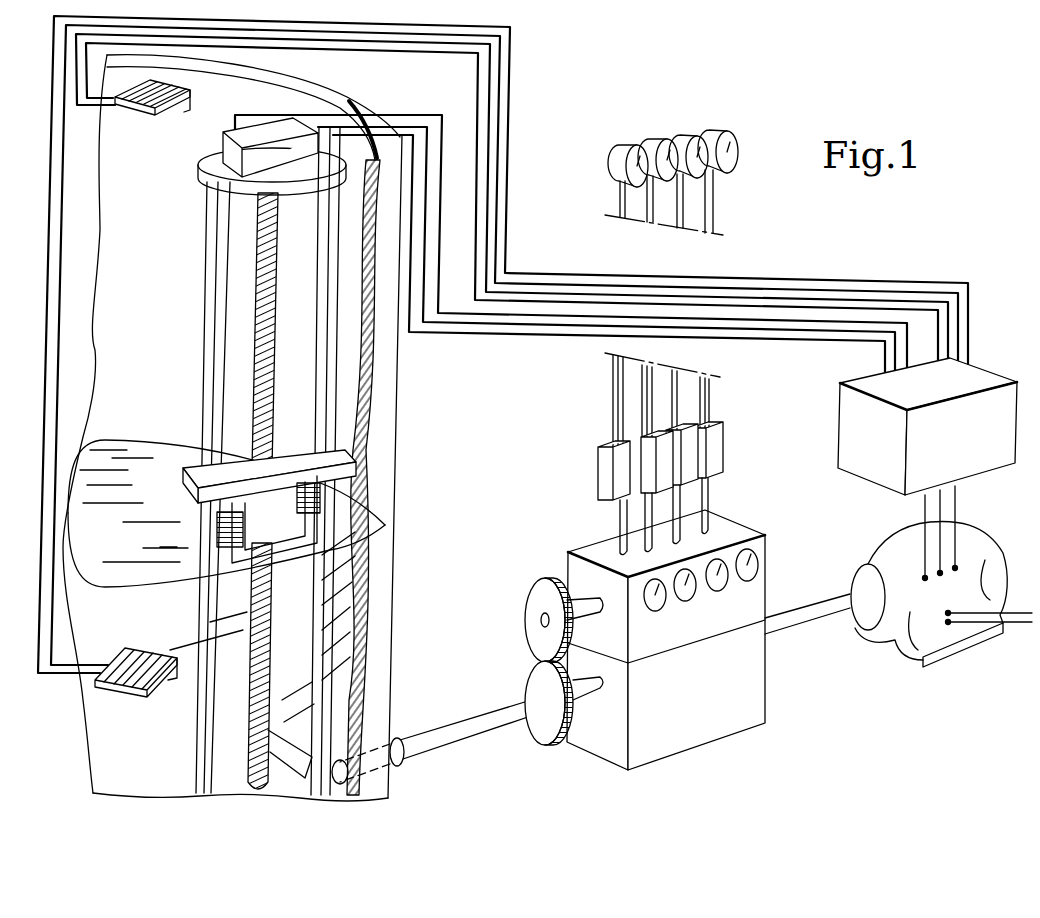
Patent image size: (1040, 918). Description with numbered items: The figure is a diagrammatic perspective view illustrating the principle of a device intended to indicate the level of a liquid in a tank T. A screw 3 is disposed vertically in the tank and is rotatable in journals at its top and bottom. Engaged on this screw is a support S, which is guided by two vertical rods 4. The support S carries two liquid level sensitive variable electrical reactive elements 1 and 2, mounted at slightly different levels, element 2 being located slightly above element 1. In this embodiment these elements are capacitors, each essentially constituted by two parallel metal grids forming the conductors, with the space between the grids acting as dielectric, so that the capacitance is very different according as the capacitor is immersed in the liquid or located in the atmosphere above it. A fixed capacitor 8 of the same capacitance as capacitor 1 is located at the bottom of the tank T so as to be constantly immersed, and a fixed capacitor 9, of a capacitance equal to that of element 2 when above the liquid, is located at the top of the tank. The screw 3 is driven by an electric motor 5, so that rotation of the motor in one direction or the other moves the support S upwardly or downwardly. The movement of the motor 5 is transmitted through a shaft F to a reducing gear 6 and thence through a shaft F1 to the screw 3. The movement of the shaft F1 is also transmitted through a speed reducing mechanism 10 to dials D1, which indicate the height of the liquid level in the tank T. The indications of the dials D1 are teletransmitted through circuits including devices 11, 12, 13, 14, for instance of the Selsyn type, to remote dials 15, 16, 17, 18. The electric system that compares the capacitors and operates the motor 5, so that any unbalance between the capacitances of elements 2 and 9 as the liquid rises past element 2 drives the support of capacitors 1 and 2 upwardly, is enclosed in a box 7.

The liquid level sensitive variable electrical reactive element 1 is at (215, 530).
The liquid level sensitive variable electrical reactive element 2 is at (333, 525).
The screw 3 is at (262, 296).
The vertical rods 4 is at (212, 400).
The electric motor 5 is at (922, 635).
The reducing gear 6 is at (705, 717).
The box 7 is at (988, 432).
The capacitor 8 is at (97, 686).
The capacitor 9 is at (118, 108).
The speed reducing mechanism 10 is at (741, 602).
The teletransmission device 11 is at (627, 483).
The teletransmission device 12 is at (655, 468).
The teletransmission device 13 is at (683, 475).
The teletransmission device 14 is at (717, 449).
The dial 15 is at (619, 160).
The dial 16 is at (650, 157).
The dial 17 is at (681, 152).
The dial 18 is at (710, 148).
The tank T is at (381, 397).
The support S is at (294, 449).
The shaft F is at (786, 627).
The shaft F1 is at (445, 738).
The dials D1 is at (658, 611).